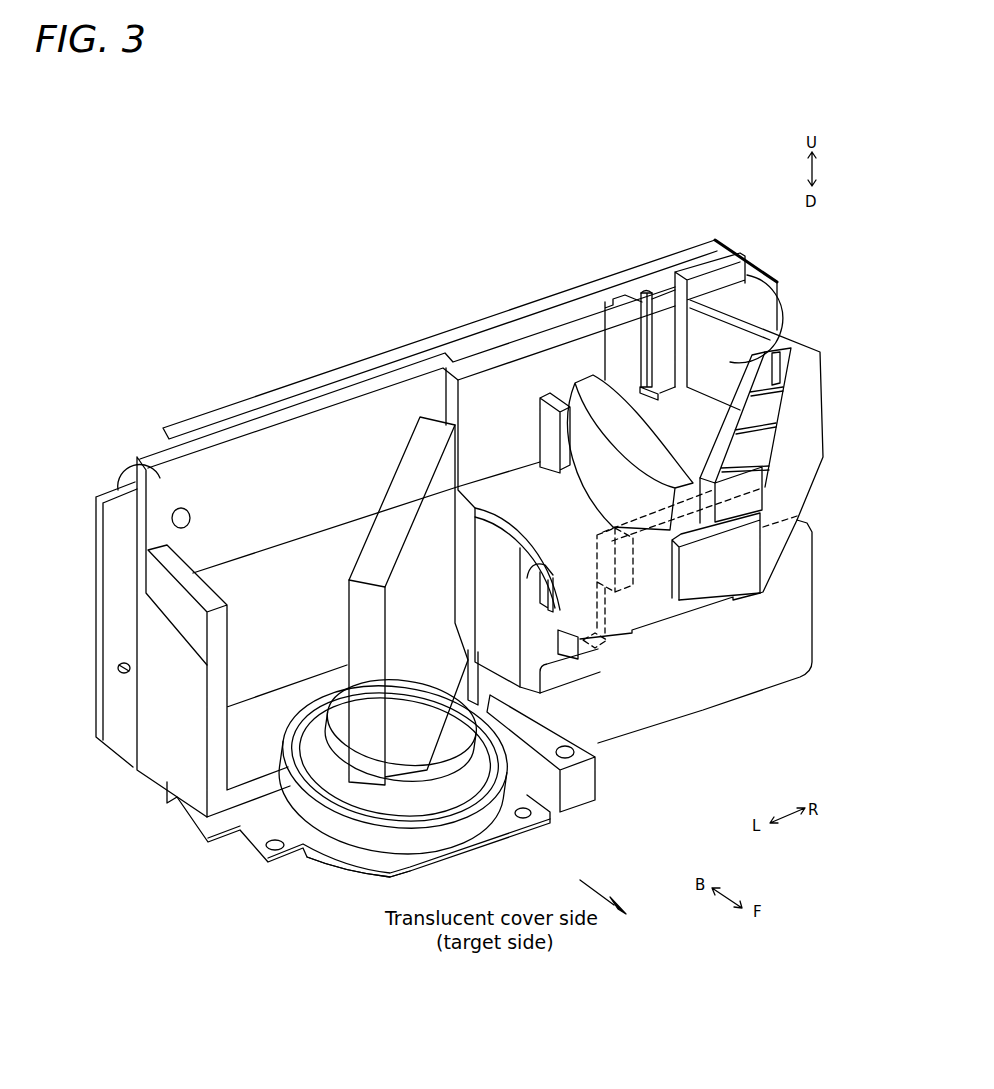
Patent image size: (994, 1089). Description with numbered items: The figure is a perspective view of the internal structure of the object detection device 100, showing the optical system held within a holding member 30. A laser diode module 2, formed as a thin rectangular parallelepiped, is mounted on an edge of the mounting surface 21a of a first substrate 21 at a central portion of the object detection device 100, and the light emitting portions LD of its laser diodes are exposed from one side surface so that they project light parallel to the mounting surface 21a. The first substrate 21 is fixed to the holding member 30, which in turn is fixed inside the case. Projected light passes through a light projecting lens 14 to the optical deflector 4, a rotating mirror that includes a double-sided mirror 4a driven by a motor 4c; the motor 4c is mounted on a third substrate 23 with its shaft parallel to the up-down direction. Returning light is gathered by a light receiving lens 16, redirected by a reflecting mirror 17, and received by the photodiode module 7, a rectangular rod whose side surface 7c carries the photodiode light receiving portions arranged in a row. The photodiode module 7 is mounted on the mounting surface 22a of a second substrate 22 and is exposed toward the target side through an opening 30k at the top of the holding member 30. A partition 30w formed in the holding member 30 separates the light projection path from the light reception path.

The object detection device 100 is at (174, 192).
The holding member 30 is at (143, 780).
The partition 30w is at (507, 488).
The opening 30k is at (642, 403).
The optical deflector 4 is at (393, 467).
The double-sided mirror 4a is at (402, 502).
The motor 4c is at (350, 797).
The third substrate 23 is at (342, 872).
The light projecting lens 14 is at (535, 595).
The light receiving lens 16 is at (583, 377).
The PD module 7 is at (646, 292).
The side surface of PD module 7c is at (652, 298).
The second substrate 22 is at (717, 238).
The mounting surface of second substrate 22a is at (667, 282).
The reflecting mirror 17 is at (735, 380).
The LD module 2 is at (627, 588).
The laser diode light emitting portion LD is at (606, 566).
The first substrate 21 is at (780, 683).
The mounting surface of first substrate 21a is at (735, 662).